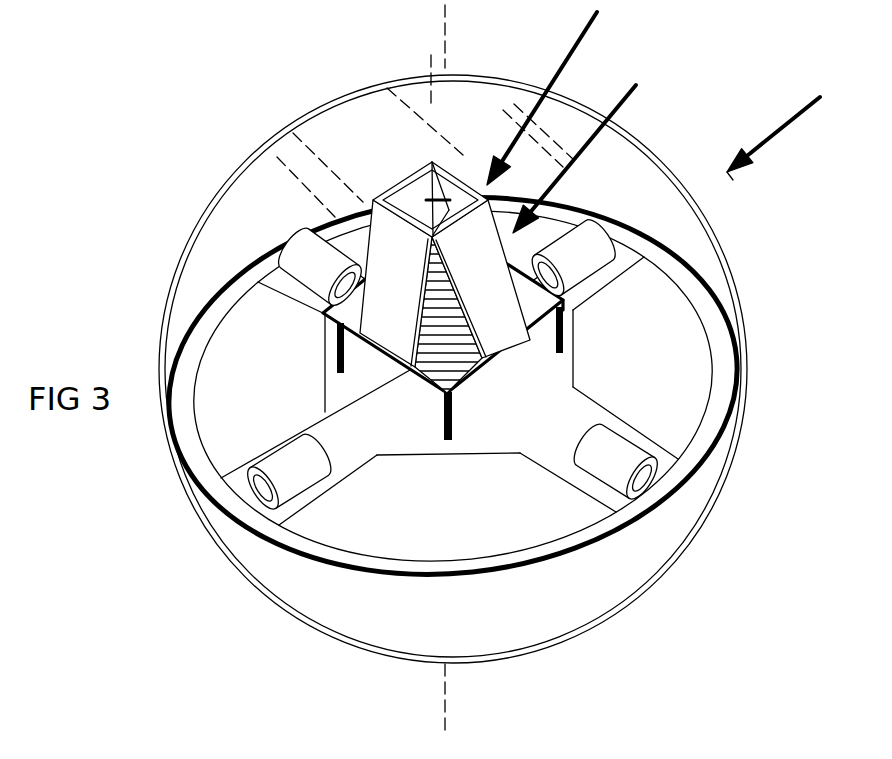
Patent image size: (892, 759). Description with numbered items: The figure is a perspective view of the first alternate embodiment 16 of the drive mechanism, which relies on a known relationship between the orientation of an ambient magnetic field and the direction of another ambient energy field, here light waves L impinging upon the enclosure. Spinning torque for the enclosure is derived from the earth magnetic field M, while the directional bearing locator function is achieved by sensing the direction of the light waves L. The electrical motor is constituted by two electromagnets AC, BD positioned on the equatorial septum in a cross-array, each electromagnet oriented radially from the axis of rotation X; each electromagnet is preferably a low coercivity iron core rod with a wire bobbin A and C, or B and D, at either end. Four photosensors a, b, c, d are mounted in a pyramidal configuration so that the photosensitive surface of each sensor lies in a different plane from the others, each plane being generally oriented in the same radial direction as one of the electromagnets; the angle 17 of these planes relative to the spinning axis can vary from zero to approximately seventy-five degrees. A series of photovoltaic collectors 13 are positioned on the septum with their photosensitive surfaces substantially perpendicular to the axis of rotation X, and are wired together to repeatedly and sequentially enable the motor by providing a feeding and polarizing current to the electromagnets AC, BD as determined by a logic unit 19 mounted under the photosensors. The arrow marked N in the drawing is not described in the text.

The photovoltaic collectors 13 is at (257, 313).
The first alternate embodiment of the drive mechanism 16 is at (181, 183).
The angle of the planes 17 is at (422, 256).
The logic unit 19 is at (533, 352).
The wire bobbin A is at (268, 528).
The wire bobbin B is at (273, 248).
The wire bobbin C is at (594, 242).
The wire bobbin D is at (622, 507).
The electromagnet AC is at (373, 433).
The electromagnet BD is at (530, 428).
The photosensor a is at (367, 227).
The photosensor b is at (400, 180).
The photosensor c is at (466, 178).
The photosensor d is at (498, 203).
The light waves L is at (574, 50).
The earth magnetic field M is at (789, 124).
The point N is at (735, 186).
The axis of rotation X is at (448, 373).